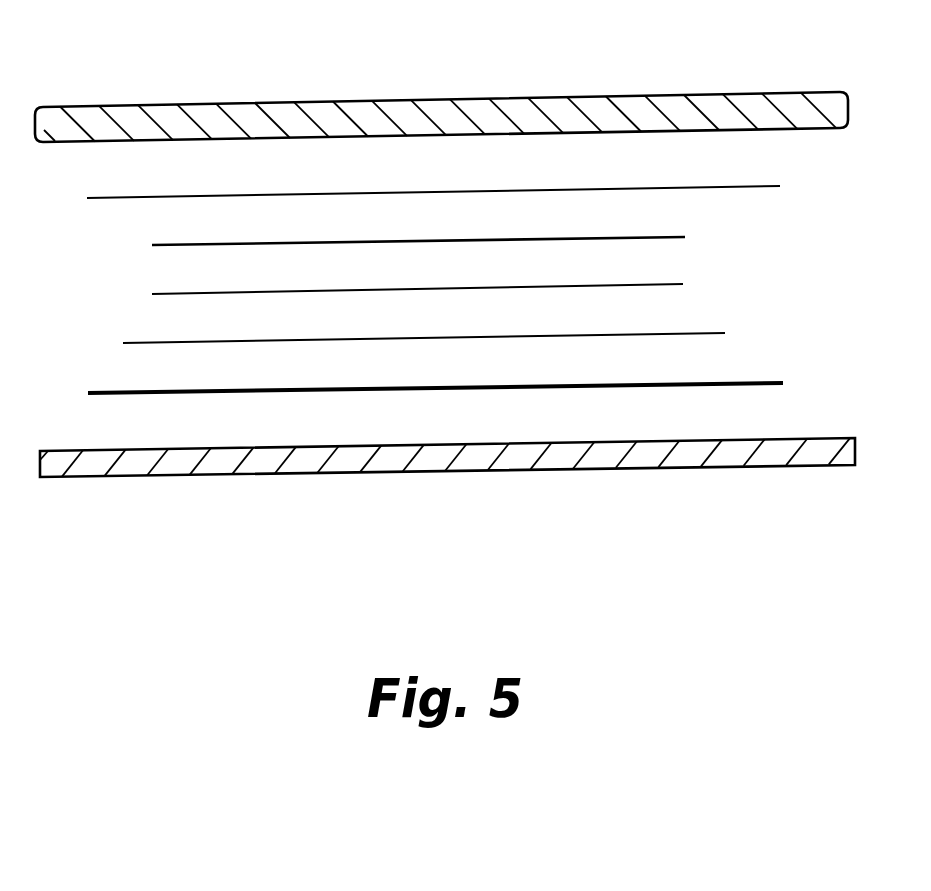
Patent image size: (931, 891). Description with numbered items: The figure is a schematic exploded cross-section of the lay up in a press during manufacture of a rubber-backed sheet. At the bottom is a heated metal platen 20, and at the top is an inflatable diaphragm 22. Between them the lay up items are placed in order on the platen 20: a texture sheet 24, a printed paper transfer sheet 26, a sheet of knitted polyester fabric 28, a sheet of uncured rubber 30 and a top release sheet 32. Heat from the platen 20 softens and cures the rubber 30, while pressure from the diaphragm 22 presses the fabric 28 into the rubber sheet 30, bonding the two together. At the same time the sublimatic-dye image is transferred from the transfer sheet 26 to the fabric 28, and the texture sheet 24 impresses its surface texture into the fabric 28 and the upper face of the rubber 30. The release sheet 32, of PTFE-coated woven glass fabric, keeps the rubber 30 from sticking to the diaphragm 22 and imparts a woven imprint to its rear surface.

The heated metal platen 20 is at (725, 458).
The inflatable diaphragm 22 is at (650, 110).
The texture sheet 24 is at (728, 385).
The printed paper transfer sheet 26 is at (700, 335).
The knitted polyester fabric 28 is at (667, 285).
The uncured rubber sheet 30 is at (675, 238).
The top release sheet 32 is at (715, 187).